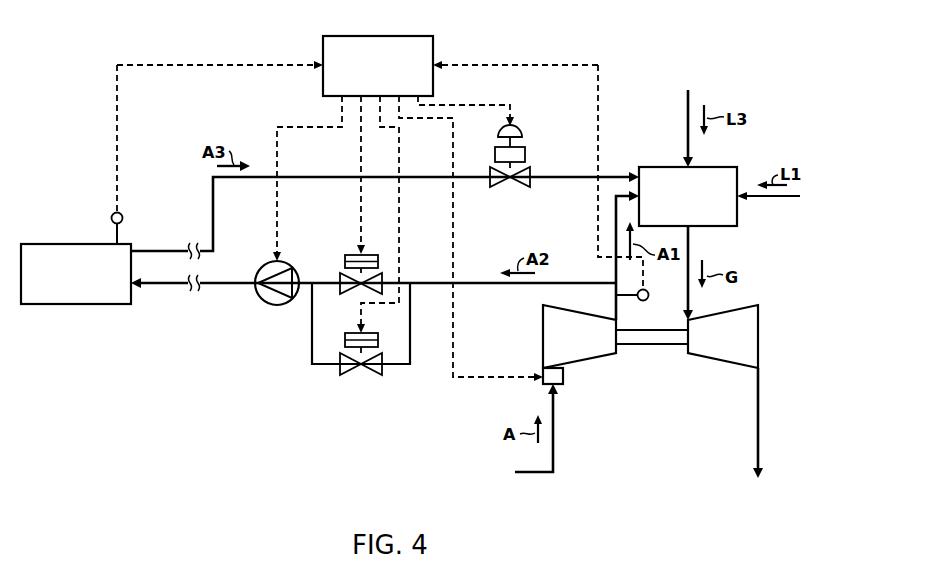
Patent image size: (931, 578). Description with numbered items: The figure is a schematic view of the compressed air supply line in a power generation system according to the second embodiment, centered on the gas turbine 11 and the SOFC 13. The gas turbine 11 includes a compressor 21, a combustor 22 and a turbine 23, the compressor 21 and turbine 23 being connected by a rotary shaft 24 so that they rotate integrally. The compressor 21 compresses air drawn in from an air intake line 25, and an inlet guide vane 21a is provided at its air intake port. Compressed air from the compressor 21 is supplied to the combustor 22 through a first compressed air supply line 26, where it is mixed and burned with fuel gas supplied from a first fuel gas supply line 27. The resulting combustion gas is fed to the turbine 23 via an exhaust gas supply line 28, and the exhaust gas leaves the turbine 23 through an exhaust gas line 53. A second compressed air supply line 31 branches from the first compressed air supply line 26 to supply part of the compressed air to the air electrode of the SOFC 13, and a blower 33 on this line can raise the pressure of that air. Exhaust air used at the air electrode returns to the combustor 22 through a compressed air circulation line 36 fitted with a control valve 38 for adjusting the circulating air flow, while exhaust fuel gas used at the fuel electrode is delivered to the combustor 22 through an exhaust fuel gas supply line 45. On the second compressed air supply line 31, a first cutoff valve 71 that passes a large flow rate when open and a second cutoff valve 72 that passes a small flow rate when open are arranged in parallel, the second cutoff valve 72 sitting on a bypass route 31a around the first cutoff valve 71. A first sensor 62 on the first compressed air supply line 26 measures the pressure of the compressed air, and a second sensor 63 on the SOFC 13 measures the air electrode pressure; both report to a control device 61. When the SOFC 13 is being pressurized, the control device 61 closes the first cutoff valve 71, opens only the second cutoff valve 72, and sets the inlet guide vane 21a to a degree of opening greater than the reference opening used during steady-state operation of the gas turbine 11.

The gas turbine 11 is at (745, 293).
The SOFC 13 is at (30, 244).
The compressor 21 is at (593, 358).
The inlet guide vane 21a is at (564, 385).
The combustor 22 is at (714, 153).
The turbine 23 is at (758, 340).
The rotary shaft 24 is at (633, 348).
The air intake line 25 is at (556, 447).
The first compressed air supply line 26 is at (613, 246).
The first fuel gas supply line 27 is at (760, 199).
The exhaust gas supply line 28 is at (691, 251).
The second compressed air supply line 31 is at (478, 281).
The bypass route 31a is at (328, 329).
The blower 33 is at (262, 265).
The compressed air circulation line 36 is at (423, 181).
The control valve 38 is at (523, 139).
The exhaust fuel gas supply line 45 is at (685, 110).
The exhaust gas line 53 is at (761, 440).
The control device 61 is at (394, 36).
The first sensor 62 is at (648, 291).
The second sensor 63 is at (123, 213).
The first cutoff valve 71 is at (356, 253).
The second cutoff valve 72 is at (352, 345).